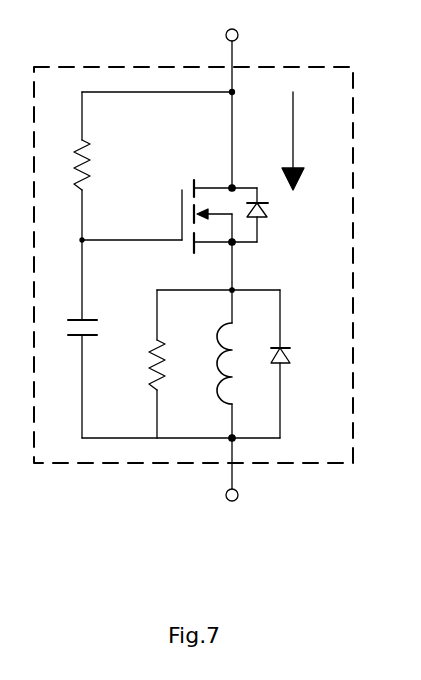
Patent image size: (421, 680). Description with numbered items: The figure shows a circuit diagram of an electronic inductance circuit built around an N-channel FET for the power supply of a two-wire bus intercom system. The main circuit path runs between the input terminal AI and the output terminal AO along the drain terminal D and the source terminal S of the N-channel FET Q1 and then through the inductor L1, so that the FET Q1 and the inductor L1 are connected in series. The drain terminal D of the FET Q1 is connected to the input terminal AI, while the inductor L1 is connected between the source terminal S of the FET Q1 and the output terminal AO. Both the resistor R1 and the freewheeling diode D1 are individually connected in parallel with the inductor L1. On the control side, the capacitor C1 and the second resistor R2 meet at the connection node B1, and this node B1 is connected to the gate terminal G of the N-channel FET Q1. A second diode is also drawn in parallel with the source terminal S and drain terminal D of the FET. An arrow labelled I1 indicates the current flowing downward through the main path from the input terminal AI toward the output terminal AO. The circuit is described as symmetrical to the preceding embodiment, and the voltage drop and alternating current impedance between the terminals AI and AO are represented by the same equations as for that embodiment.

The input terminal AI is at (232, 51).
The output terminal AO is at (232, 481).
The second resistor R2 is at (94, 165).
The capacitor C1 is at (97, 329).
The connection node B1 is at (65, 246).
The gate terminal G is at (132, 215).
The drain terminal D is at (226, 170).
The source terminal S is at (226, 261).
The N-channel FET Q1 is at (241, 216).
The current I1 is at (302, 141).
The resistor R1 is at (168, 365).
The inductor L1 is at (236, 380).
The freewheeling diode D1 is at (290, 354).